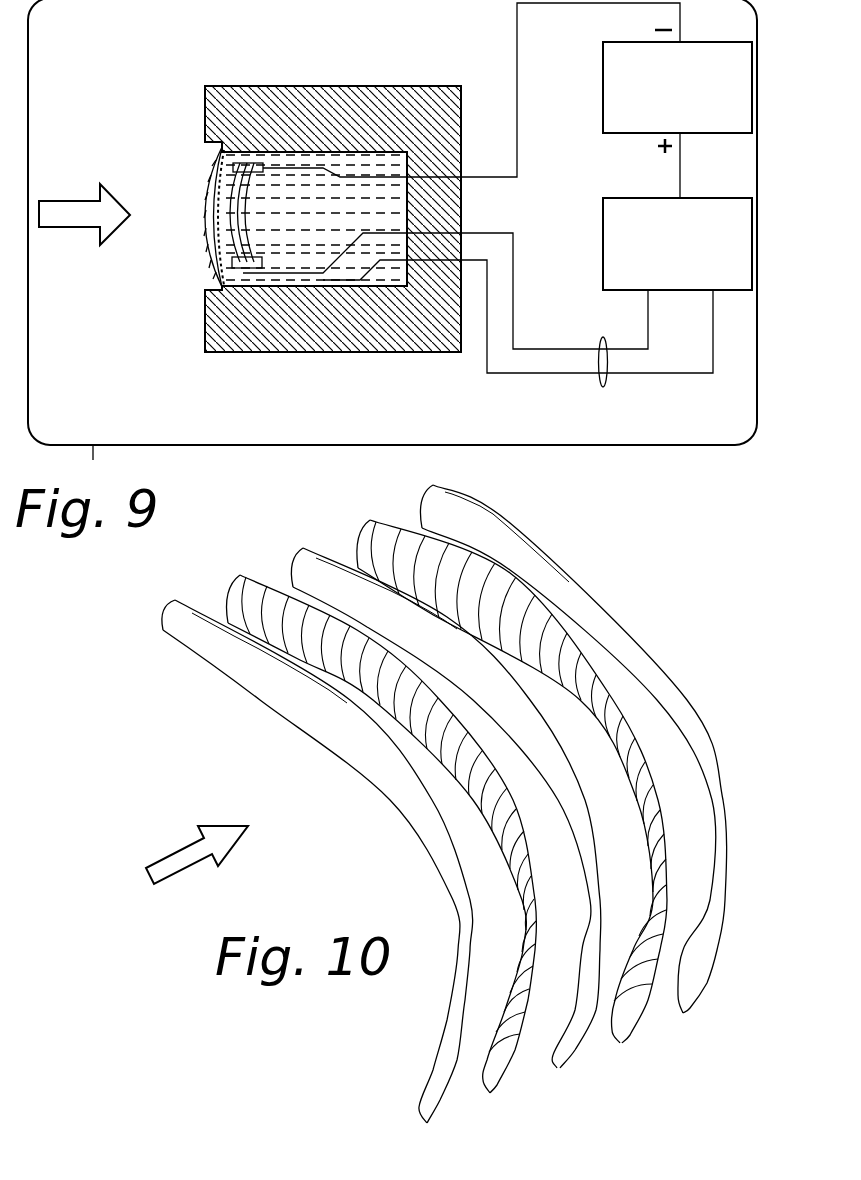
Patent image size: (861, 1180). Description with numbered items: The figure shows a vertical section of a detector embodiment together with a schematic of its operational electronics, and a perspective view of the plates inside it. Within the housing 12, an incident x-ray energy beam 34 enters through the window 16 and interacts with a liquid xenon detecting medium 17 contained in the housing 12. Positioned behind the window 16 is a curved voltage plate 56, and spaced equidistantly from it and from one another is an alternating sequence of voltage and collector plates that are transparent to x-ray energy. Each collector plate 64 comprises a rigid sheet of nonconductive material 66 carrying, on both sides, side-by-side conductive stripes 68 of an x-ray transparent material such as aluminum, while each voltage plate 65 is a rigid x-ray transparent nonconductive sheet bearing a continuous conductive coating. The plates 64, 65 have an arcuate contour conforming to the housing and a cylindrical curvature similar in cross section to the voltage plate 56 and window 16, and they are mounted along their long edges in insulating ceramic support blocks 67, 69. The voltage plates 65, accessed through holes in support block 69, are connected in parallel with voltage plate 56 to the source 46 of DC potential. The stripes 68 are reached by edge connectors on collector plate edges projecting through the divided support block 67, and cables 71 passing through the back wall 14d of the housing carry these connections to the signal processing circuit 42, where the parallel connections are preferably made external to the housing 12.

In FIG. 9, the housing 12 is at (330, 353).
In FIG. 9, the back wall 14d is at (461, 205).
In FIG. 9, the window 16 is at (218, 176).
In FIG. 9, the liquid xenon detecting medium 17 is at (378, 221).
In FIG. 9, the incident x-ray energy beam 34 is at (78, 200).
In FIG. 10, the incident x-ray energy beam 34 is at (172, 841).
In FIG. 9, the signal processing circuit 42 is at (733, 291).
In FIG. 9, the source 46 is at (723, 42).
In FIG. 9, the voltage plate 56 is at (207, 246).
In FIG. 10, the voltage plate 56 is at (440, 1100).
In FIG. 9, the collector plate 64 is at (248, 205).
In FIG. 10, the collector plate 64 is at (264, 568).
In FIG. 9, the voltage plate 65 is at (247, 235).
In FIG. 10, the voltage plate 65 is at (573, 1046).
In FIG. 10, the nonconductive material 66 is at (500, 1085).
In FIG. 9, the support block 67 is at (262, 262).
In FIG. 10, the conductive stripes 68 is at (520, 1040).
In FIG. 9, the support block 69 is at (268, 170).
In FIG. 9, the cables 71 is at (600, 340).